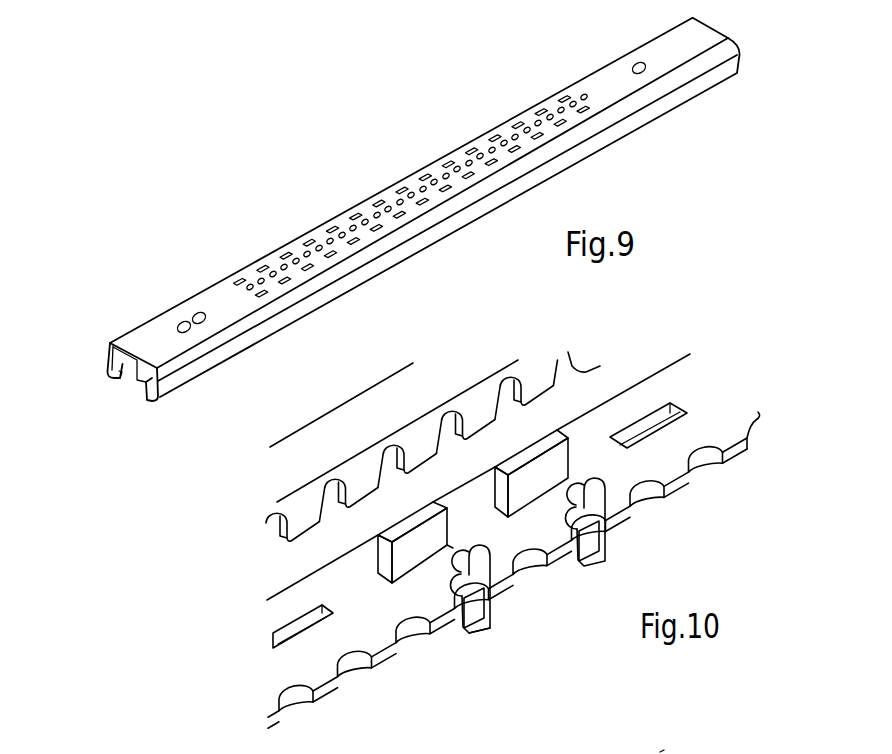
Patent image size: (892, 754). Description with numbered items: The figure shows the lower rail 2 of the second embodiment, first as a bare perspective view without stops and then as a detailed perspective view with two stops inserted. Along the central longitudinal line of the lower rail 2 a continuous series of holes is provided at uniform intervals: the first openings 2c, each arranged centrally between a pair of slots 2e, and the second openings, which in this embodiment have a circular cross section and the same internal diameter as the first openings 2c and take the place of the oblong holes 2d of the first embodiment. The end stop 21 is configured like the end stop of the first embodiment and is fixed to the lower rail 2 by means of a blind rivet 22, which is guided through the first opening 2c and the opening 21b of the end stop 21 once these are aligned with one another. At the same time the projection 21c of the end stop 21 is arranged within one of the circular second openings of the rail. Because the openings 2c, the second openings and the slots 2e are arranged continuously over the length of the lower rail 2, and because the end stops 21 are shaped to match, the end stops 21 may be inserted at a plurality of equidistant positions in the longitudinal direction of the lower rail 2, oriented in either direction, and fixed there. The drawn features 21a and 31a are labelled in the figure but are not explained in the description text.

In FIG. 9, the lower rail 2 is at (643, 98).
In FIG. 10, the first opening 2c is at (488, 624).
In FIG. 10, the oblong hole 2d is at (403, 620).
In FIG. 10, the slot 2e is at (663, 418).
In FIG. 10, the end stop 21 is at (326, 601).
In FIG. 10, the slider block top face 21a is at (408, 523).
In FIG. 10, the opening 21b is at (463, 631).
In FIG. 10, the projection 21c is at (397, 631).
In FIG. 10, the blind rivet 22 is at (497, 627).
In FIG. 10, the connecting element 31a is at (657, 753).